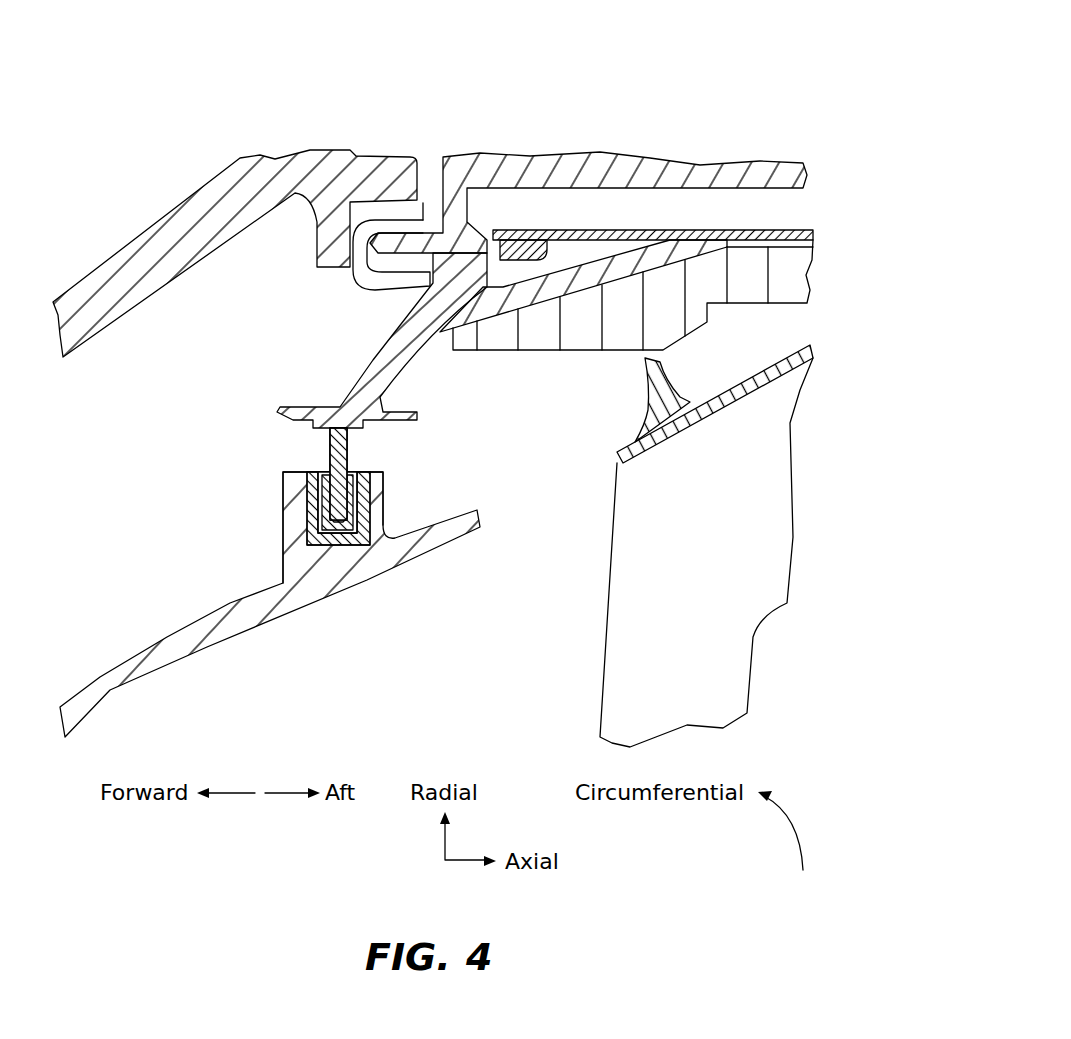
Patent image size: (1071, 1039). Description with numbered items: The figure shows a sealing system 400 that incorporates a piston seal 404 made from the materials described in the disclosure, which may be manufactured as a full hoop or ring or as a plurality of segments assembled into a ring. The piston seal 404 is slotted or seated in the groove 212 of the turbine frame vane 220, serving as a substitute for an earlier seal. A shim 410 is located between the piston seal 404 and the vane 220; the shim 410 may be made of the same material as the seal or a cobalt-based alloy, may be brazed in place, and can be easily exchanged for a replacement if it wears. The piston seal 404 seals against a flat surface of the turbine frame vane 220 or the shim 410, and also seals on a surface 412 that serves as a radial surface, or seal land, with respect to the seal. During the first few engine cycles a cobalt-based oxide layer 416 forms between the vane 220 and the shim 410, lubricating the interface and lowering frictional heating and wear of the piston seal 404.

The system 400 is at (669, 98).
The piston seal 404 is at (330, 450).
The surface 412 is at (355, 437).
The shim 410 is at (382, 493).
The oxide layer 416 is at (300, 503).
The turbine frame vane 220 is at (295, 545).
The groove 212 is at (340, 547).